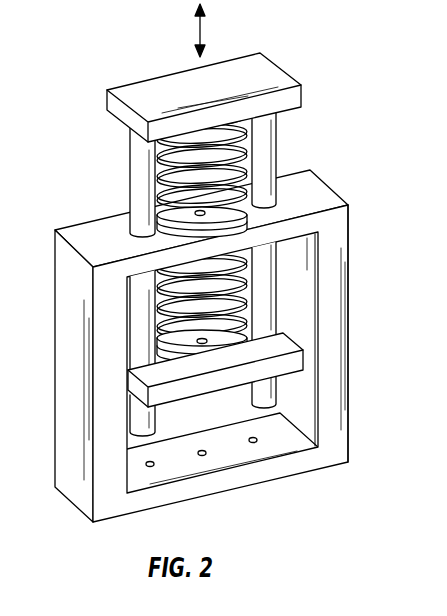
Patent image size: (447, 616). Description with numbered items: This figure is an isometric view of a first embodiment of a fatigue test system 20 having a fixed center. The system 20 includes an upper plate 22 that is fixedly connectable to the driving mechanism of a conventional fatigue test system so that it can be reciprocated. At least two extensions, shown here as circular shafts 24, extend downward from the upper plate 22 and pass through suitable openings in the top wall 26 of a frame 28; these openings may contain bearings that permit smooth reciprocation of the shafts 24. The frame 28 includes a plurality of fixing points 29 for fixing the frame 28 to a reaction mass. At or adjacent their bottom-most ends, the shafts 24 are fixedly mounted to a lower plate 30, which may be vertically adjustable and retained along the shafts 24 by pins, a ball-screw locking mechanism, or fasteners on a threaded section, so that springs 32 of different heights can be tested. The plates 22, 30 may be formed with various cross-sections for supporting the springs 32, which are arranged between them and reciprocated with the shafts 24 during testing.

The fatigue test system 20 is at (211, 269).
The upper plate 22 is at (118, 92).
The circular shafts 24 is at (138, 163).
The top wall 26 is at (236, 344).
The frame 28 is at (350, 372).
The fixing points 29 is at (155, 464).
The lower plate 30 is at (132, 381).
The springs 32 is at (160, 185).